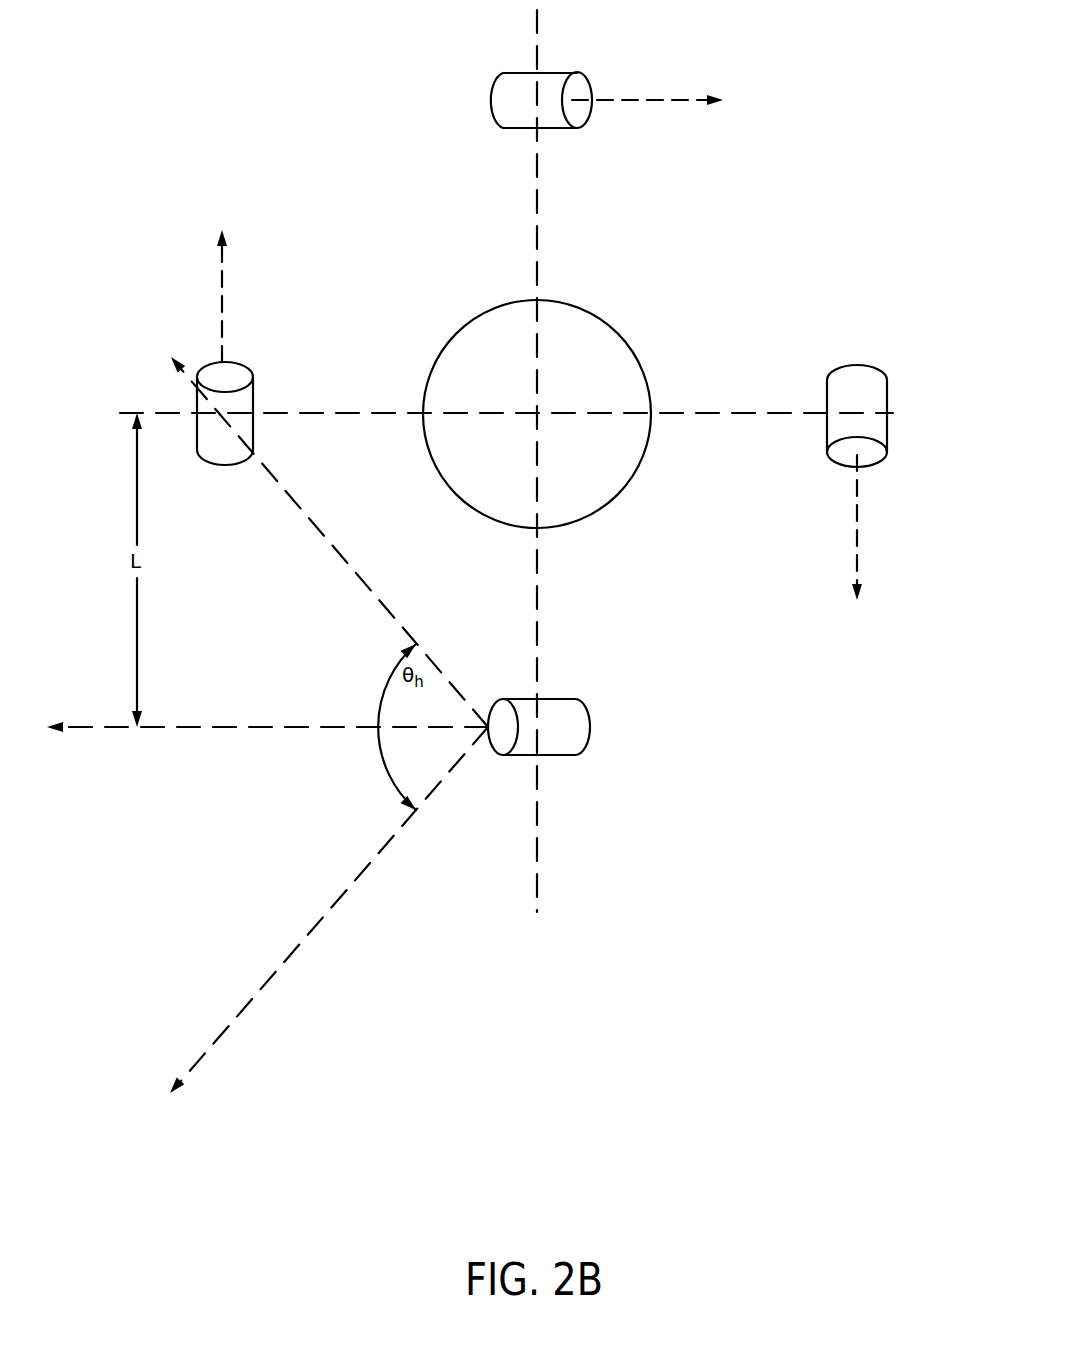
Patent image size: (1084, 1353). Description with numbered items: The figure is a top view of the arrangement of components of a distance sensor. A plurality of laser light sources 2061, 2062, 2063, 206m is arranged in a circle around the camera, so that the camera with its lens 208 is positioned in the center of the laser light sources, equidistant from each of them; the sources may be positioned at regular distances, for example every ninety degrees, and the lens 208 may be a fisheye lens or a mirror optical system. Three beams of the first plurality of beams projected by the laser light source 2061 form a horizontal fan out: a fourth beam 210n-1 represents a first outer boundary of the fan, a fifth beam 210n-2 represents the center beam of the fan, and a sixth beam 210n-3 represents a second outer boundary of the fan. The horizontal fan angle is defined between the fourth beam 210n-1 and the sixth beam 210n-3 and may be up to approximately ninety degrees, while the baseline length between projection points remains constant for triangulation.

The lens 208 is at (537, 414).
The laser light source 2063 is at (554, 73).
The laser light source 2062 is at (243, 366).
The laser light source 206m is at (856, 366).
The laser light source 2061 is at (588, 741).
The fourth beam 210n-1 is at (318, 528).
The fifth beam 210n-2 is at (177, 727).
The sixth beam 210n-3 is at (286, 973).